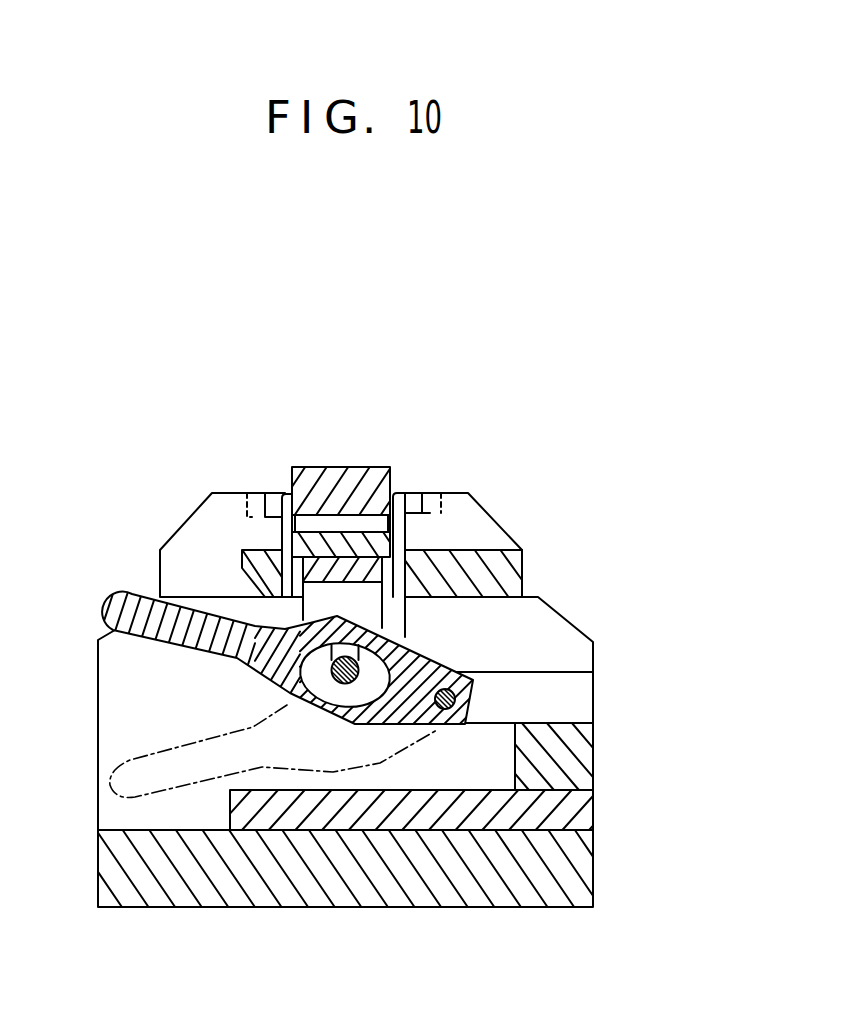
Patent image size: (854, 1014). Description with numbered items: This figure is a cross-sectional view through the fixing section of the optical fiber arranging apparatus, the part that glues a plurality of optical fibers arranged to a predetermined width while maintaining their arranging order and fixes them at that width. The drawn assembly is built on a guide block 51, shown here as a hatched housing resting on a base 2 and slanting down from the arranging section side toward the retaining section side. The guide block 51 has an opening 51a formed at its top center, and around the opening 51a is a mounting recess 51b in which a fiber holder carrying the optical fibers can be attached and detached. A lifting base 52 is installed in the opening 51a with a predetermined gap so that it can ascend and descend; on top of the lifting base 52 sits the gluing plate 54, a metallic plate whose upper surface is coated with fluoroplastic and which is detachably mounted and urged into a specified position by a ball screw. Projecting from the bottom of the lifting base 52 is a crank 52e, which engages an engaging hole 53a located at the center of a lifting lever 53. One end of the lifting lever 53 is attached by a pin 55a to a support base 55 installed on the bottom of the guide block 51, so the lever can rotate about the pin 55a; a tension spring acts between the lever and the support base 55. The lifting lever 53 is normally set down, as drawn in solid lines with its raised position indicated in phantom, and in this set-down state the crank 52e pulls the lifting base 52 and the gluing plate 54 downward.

The base 2 is at (333, 888).
The guide block 51 is at (563, 607).
The opening 51a is at (289, 493).
The mounting recess 51b is at (412, 496).
The lifting base 52 is at (391, 537).
The crank 52e is at (373, 605).
The lifting lever 53 is at (148, 640).
The engaging hole 53a is at (330, 700).
The gluing plate 54 is at (340, 480).
The support base 55 is at (572, 669).
The pin 55a is at (468, 691).